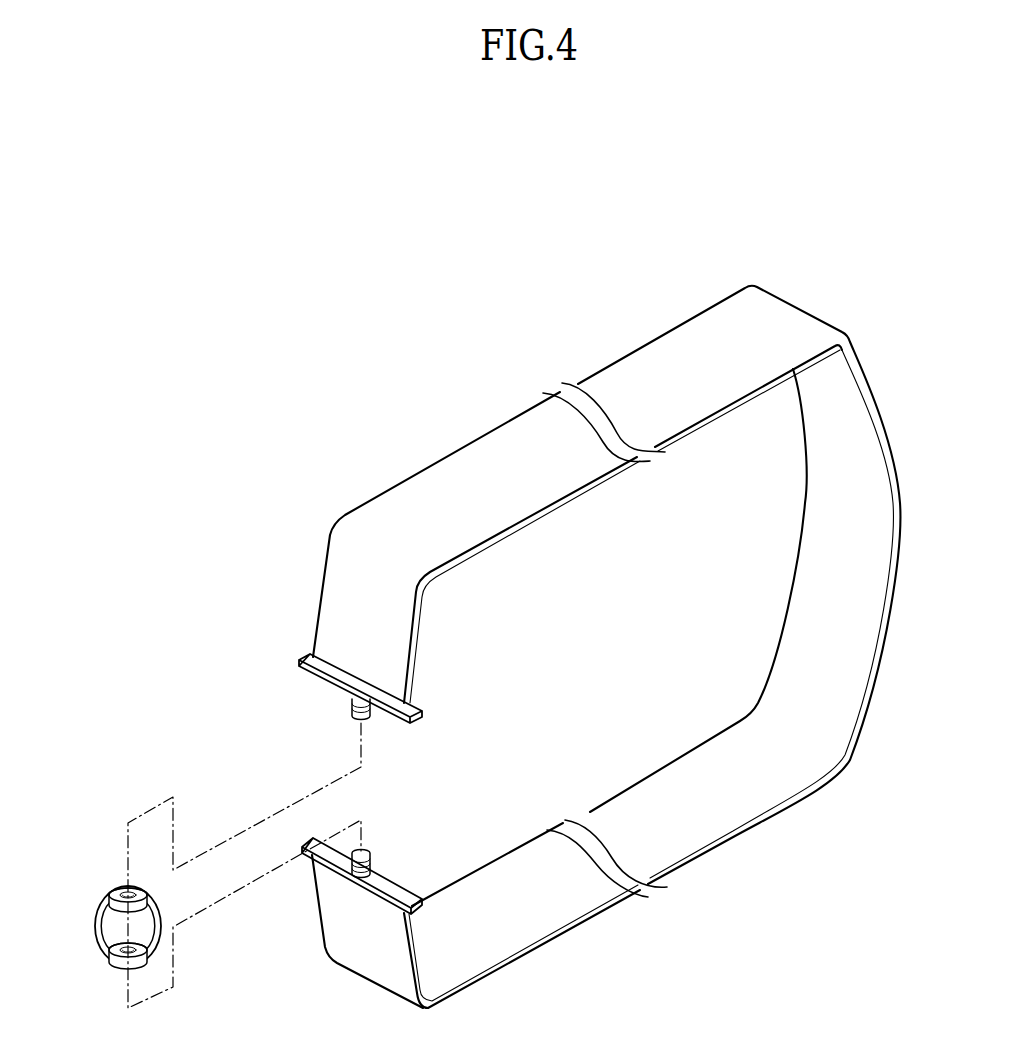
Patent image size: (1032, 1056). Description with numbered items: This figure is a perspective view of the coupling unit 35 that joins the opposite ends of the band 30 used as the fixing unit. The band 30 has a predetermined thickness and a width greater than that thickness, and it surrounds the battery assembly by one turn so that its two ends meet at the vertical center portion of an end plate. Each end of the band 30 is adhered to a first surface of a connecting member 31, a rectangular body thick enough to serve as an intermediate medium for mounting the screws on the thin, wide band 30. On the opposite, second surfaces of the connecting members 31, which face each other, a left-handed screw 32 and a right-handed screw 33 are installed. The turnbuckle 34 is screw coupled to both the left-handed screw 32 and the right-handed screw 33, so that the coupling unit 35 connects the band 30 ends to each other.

The band 30 is at (368, 550).
The connecting member 31 is at (316, 677).
The left-handed screw 32 is at (350, 700).
The right-handed screw 33 is at (345, 878).
The turnbuckle 34 is at (102, 918).
The coupling unit 35 is at (268, 777).